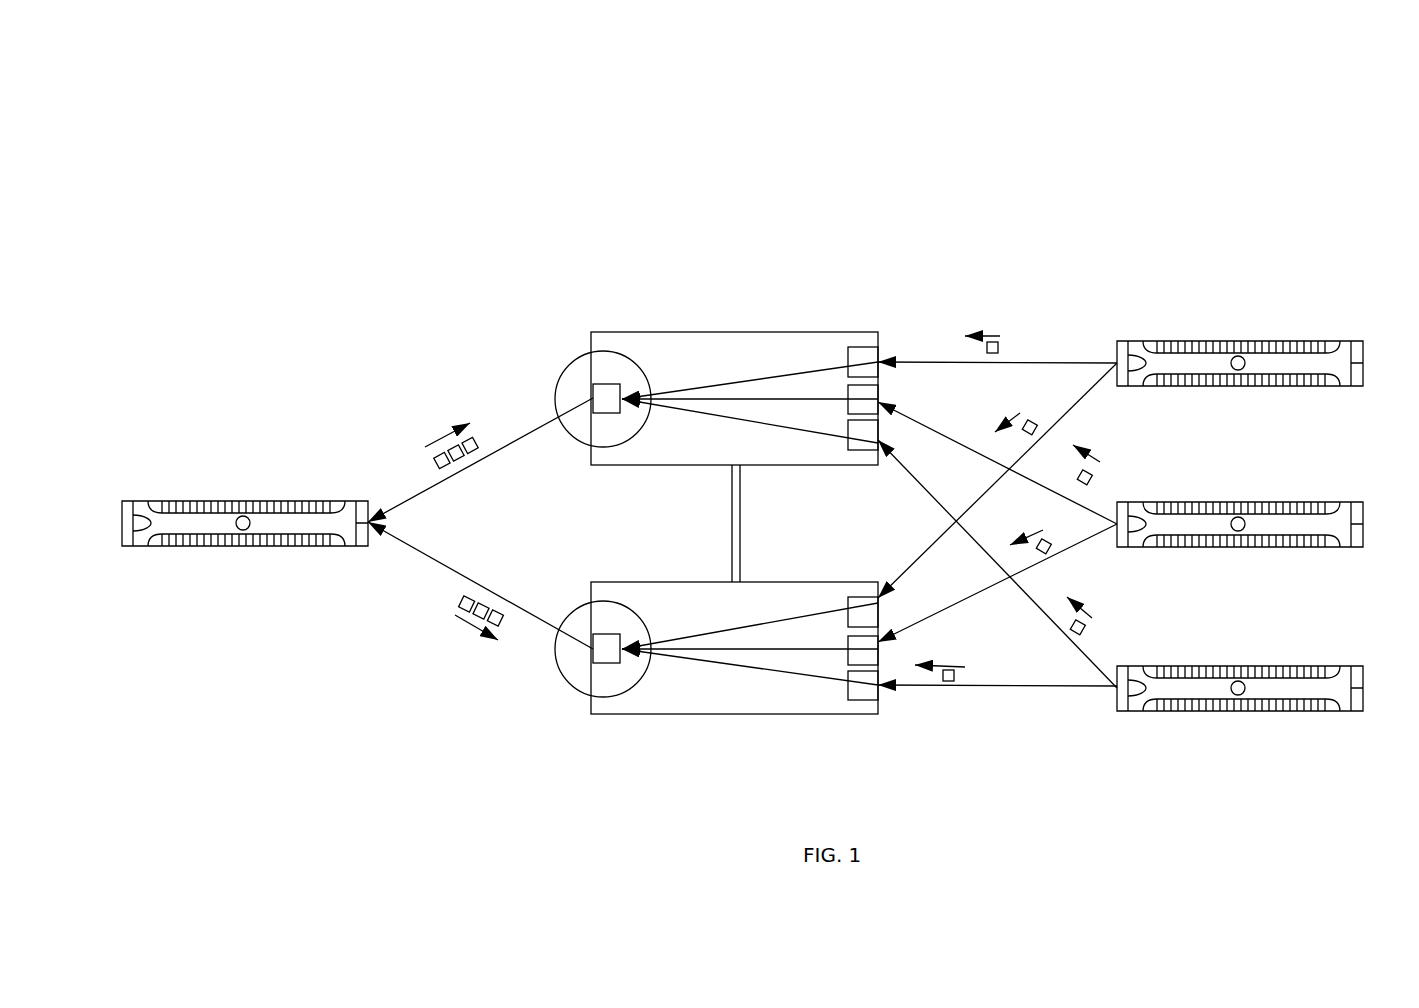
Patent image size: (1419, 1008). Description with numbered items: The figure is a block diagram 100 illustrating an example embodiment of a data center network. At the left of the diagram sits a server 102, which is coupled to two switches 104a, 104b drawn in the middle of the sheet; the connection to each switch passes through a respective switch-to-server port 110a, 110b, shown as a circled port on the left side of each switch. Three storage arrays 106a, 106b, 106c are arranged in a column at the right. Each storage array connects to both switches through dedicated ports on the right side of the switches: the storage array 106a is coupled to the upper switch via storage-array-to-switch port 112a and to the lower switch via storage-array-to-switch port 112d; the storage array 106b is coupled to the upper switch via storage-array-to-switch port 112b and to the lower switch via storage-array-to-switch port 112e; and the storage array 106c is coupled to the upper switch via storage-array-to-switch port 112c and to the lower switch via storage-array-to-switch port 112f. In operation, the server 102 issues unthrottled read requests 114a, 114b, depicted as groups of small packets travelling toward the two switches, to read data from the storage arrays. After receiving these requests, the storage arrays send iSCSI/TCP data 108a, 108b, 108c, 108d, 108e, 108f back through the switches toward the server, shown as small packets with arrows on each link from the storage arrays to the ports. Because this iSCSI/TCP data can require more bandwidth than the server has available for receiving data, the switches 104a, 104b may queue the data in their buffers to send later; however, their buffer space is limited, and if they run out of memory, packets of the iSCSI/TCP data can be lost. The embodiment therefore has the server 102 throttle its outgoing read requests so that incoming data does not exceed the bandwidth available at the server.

The block diagram 100 is at (1186, 118).
The server 102 is at (166, 501).
The switch 104a is at (721, 340).
The switch 104b is at (697, 682).
The storage array 106a is at (1245, 341).
The storage array 106b is at (1250, 502).
The storage array 106c is at (1248, 666).
The iSCSI/TCP data 108a is at (1000, 348).
The iSCSI/TCP data 108b is at (1032, 420).
The iSCSI/TCP data 108c is at (1093, 478).
The iSCSI/TCP data 108d is at (1052, 545).
The iSCSI/TCP data 108e is at (1085, 630).
The iSCSI/TCP data 108f is at (957, 675).
The switch-to-server port 110a is at (586, 356).
The switch-to-server port 110b is at (576, 690).
The storage-array-to-switch port 112a is at (882, 347).
The storage-array-to-switch port 112b is at (880, 399).
The storage-array-to-switch port 112c is at (880, 445).
The storage-array-to-switch port 112d is at (880, 600).
The storage-array-to-switch port 112e is at (880, 652).
The storage-array-to-switch port 112f is at (880, 702).
The unthrottled read requests 114a is at (425, 462).
The unthrottled read requests 114b is at (455, 600).